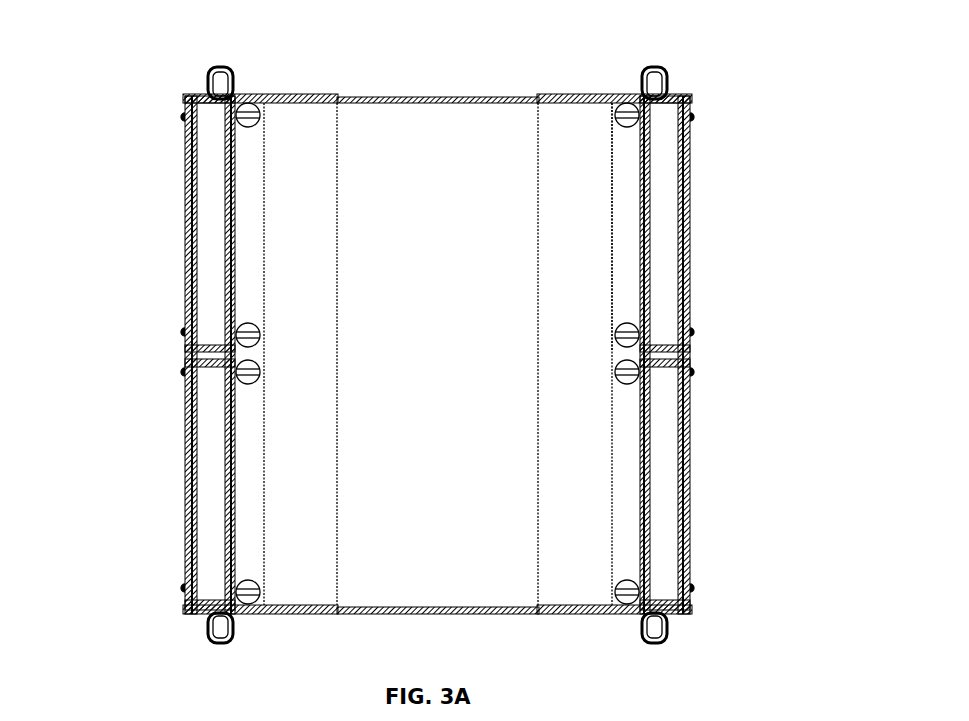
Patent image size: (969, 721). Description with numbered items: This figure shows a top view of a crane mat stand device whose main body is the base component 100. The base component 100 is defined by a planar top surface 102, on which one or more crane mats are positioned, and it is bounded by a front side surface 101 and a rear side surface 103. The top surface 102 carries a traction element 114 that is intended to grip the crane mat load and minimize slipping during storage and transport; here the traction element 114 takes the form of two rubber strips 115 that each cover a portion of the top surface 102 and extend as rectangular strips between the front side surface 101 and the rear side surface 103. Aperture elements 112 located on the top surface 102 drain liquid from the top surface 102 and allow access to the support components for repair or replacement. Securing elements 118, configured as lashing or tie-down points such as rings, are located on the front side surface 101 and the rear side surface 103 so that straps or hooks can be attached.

The base component 100 is at (453, 130).
The front side surface 101 is at (500, 610).
The top surface 102 is at (405, 578).
The rear side surface 103 is at (365, 102).
The aperture element 112 is at (635, 335).
The traction element 114 is at (568, 248).
The rubber strip 115 is at (298, 259).
The securing element 118 is at (222, 82).